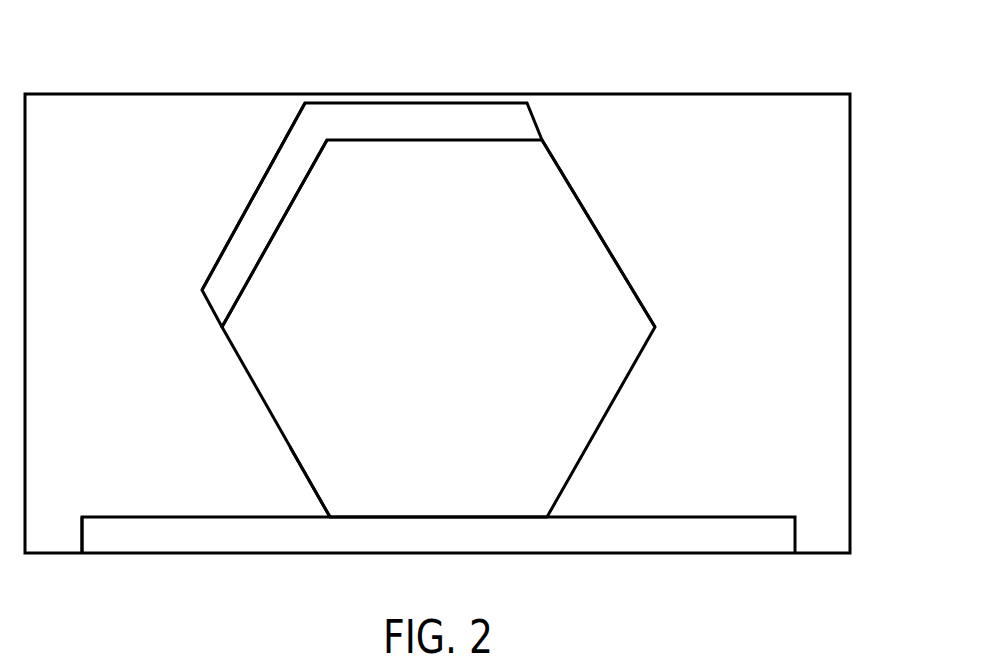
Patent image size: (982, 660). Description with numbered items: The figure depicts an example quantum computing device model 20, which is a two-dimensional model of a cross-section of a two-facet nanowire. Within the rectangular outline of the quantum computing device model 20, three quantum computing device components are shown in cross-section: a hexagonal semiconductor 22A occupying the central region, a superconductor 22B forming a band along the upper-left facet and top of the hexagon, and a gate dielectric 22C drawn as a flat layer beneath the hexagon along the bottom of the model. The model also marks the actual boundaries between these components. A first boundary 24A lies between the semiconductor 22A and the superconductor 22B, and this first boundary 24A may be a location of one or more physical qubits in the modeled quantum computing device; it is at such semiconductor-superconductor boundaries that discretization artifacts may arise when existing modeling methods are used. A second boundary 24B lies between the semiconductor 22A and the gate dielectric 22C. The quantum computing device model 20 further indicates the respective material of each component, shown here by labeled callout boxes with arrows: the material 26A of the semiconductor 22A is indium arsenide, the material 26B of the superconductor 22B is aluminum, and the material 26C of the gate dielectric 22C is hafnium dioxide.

The quantum computing device model 20 is at (851, 323).
The semiconductor 22A is at (610, 247).
The superconductor 22B is at (253, 188).
The gate dielectric 22C is at (82, 537).
The first boundary 24A is at (259, 237).
The second boundary 24B is at (343, 501).
The material of the semiconductor 26A is at (792, 454).
The material of the superconductor 26B is at (717, 42).
The material of the gate dielectric 26C is at (210, 416).